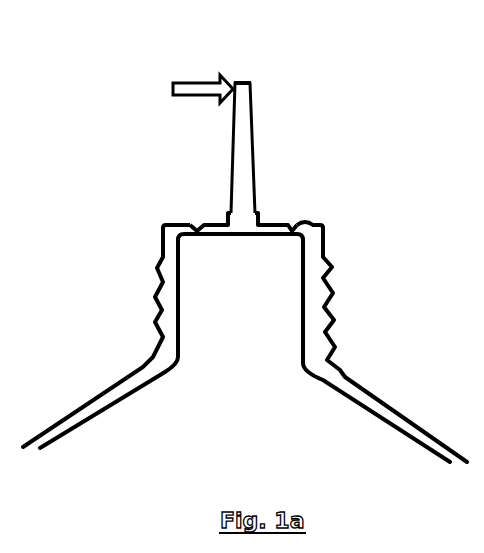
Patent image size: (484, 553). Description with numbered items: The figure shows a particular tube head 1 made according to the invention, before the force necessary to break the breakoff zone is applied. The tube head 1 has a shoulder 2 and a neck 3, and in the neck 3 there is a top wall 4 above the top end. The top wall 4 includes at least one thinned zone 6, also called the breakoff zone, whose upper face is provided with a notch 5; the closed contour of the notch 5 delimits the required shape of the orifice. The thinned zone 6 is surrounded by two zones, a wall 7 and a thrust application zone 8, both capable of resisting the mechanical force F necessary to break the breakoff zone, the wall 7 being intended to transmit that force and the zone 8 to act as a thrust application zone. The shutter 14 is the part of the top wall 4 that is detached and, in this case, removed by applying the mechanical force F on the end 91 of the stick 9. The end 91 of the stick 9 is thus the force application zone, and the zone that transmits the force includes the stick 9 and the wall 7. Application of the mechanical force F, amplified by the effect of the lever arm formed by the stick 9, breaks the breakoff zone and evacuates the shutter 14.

The tube head 1 is at (405, 374).
The shoulder 2 is at (90, 400).
The neck 3 is at (162, 296).
The top wall 4 is at (247, 228).
The notch 5 is at (287, 223).
The thinned zone 6 is at (292, 232).
The wall 7 is at (208, 231).
The thrust application zone 8 is at (192, 231).
The stick 9 is at (242, 158).
The end of the stick 91 is at (250, 84).
The shutter 14 is at (190, 149).
The mechanical force F is at (191, 88).